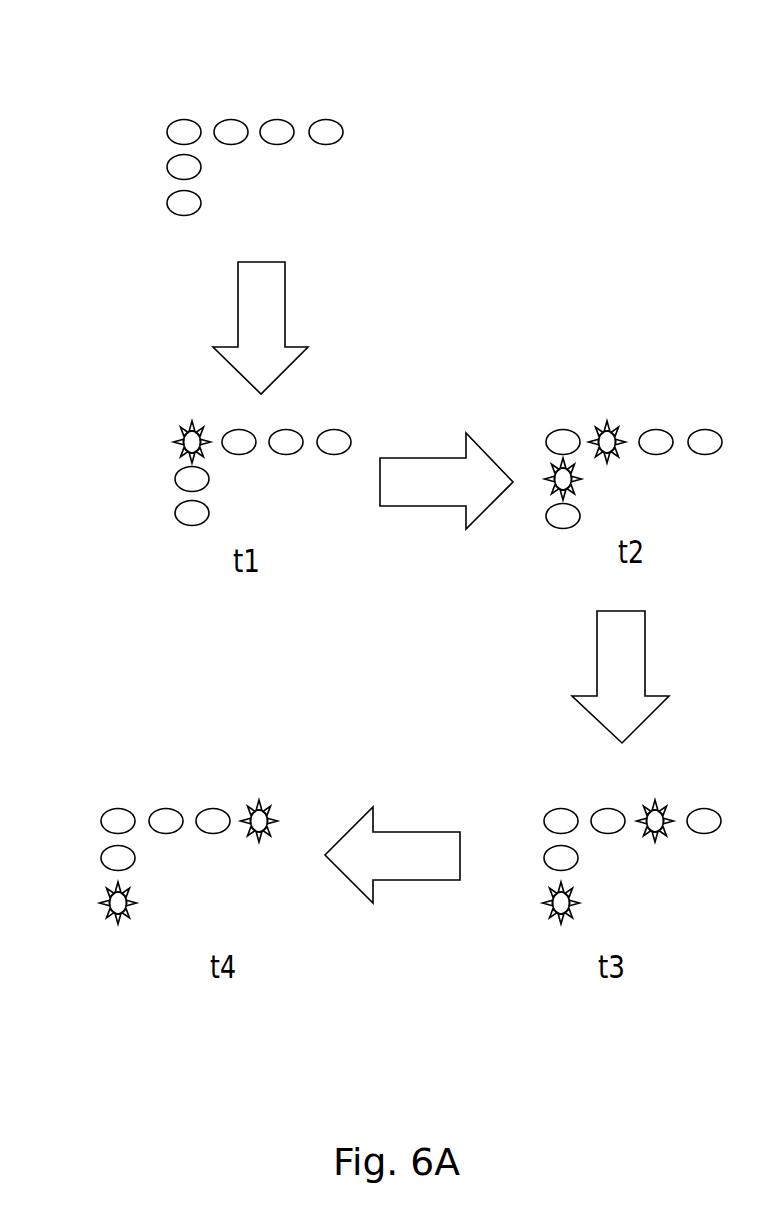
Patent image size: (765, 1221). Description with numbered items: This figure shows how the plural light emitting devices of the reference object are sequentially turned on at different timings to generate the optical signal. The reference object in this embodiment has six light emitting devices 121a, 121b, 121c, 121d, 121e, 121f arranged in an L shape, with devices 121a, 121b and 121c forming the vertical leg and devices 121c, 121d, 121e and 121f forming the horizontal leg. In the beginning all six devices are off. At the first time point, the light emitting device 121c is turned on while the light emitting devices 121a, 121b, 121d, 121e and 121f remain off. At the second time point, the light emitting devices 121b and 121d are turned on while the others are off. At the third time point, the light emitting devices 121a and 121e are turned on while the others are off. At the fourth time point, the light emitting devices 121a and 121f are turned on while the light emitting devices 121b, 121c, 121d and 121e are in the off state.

The light emitting device 121a is at (167, 200).
The light emitting device 121b is at (167, 164).
The light emitting device 121c is at (167, 129).
The light emitting device 121d is at (227, 119).
The light emitting device 121e is at (273, 119).
The light emitting device 121f is at (334, 119).